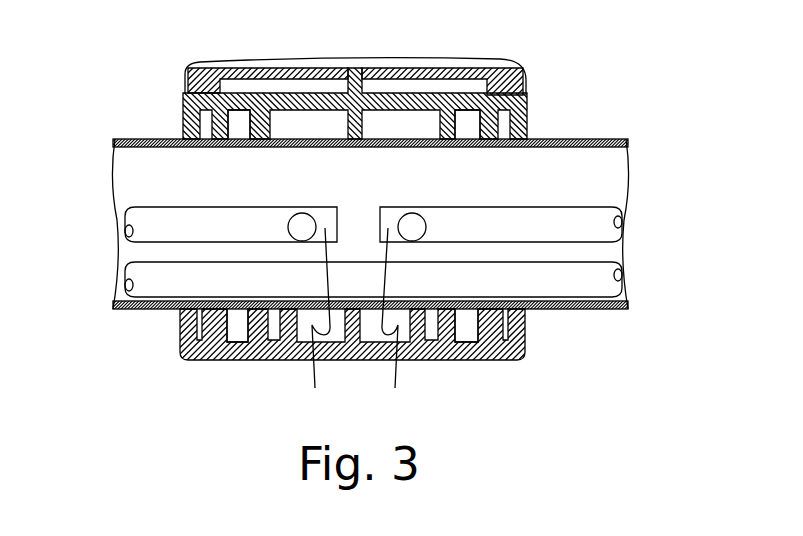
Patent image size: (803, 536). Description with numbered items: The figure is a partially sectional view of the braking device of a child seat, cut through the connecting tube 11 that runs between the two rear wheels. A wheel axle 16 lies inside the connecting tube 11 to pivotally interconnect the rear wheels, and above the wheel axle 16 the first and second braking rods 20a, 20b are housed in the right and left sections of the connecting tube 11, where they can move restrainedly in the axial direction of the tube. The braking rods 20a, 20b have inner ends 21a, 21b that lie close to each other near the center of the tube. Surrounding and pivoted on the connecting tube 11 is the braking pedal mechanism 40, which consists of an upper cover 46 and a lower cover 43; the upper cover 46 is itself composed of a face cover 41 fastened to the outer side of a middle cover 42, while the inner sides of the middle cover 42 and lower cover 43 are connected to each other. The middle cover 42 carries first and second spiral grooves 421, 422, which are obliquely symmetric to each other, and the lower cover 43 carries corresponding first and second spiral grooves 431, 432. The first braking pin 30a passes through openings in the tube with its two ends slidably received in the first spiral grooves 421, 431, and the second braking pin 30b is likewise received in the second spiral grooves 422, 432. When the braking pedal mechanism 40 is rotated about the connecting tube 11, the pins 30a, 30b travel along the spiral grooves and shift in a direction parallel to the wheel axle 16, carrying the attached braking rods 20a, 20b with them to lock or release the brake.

The connecting tube 11 is at (604, 142).
The wheel axle 16 is at (560, 287).
The first braking rod 20a is at (560, 227).
The second braking rod 20b is at (208, 222).
The inner end of first braking rod 21a is at (382, 323).
The inner end of second braking rod 21b is at (318, 323).
The first braking pin 30a is at (413, 226).
The second braking pin 30b is at (300, 220).
The braking pedal mechanism 40 is at (590, 57).
The face cover 41 is at (220, 62).
The middle cover 42 is at (182, 103).
The lower cover 43 is at (180, 342).
The upper cover 46 is at (75, 40).
The first spiral groove of middle cover 421 is at (467, 122).
The second spiral groove of middle cover 422 is at (242, 118).
The first spiral groove of lower cover 431 is at (467, 330).
The second spiral groove of lower cover 432 is at (232, 333).